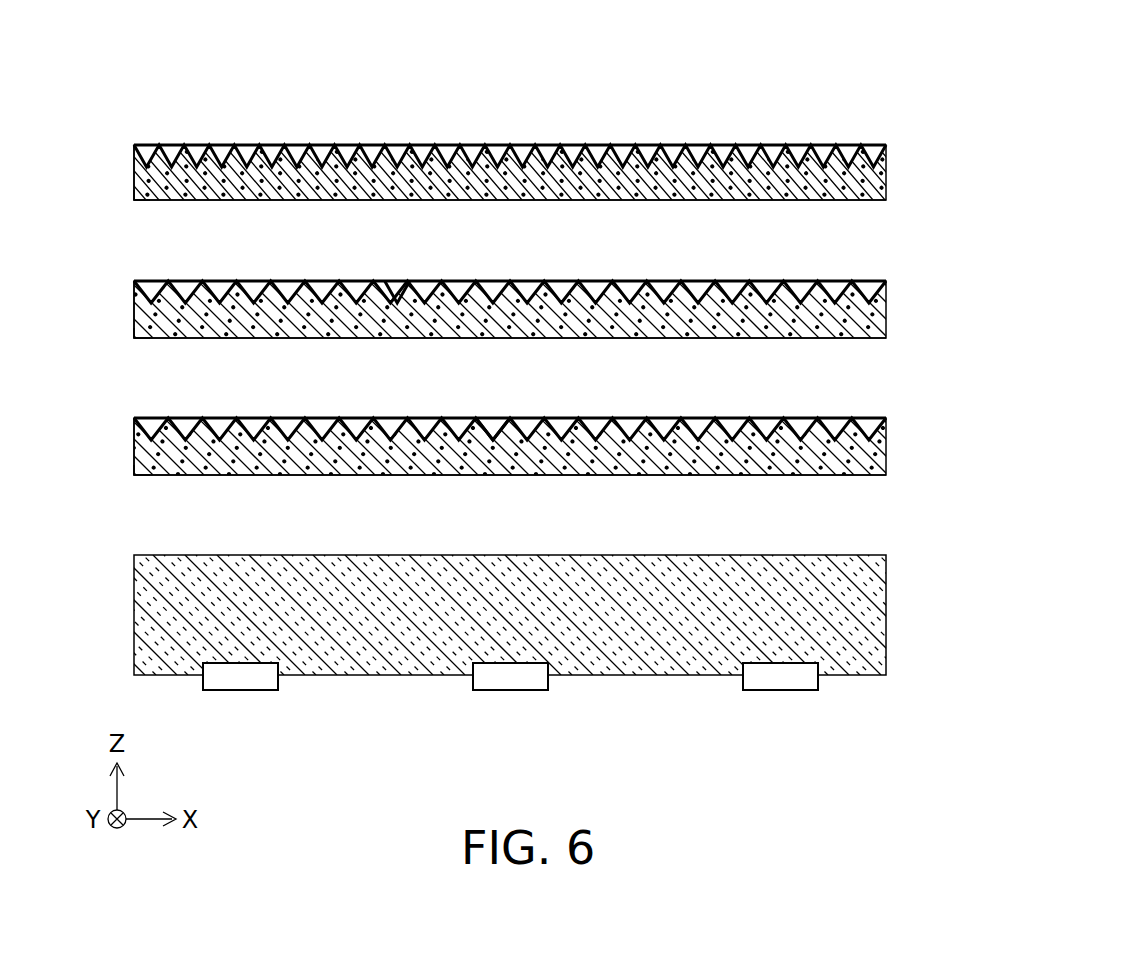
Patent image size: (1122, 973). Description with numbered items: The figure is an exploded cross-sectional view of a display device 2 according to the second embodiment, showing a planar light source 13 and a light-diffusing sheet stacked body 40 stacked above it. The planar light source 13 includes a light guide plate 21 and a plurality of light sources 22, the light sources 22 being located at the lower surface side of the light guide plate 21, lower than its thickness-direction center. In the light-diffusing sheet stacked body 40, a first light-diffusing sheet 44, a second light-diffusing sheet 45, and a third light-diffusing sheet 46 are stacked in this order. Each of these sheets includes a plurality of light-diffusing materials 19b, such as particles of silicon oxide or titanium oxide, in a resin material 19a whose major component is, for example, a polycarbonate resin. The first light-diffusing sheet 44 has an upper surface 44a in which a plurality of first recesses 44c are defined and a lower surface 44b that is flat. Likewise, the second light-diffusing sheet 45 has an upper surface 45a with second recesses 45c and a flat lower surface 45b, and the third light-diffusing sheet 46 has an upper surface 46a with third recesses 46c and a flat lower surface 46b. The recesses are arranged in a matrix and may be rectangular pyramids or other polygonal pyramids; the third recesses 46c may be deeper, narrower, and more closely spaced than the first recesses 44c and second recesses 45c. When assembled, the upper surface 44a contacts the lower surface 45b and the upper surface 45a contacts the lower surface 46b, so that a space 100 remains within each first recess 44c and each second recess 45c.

The display device 2 is at (892, 63).
The planar light source 13 is at (940, 556).
The resin material 19a is at (139, 178).
The light-diffusing material 19b is at (151, 196).
The light guide plate 21 is at (393, 640).
The light source 22 is at (240, 676).
The light-diffusing sheet stacked body 40 is at (940, 163).
The first light-diffusing sheet 44 is at (509, 438).
The upper surface of the first light-diffusing sheet 44a is at (386, 418).
The lower surface of the first light-diffusing sheet 44b is at (462, 477).
The first recess 44c is at (246, 428).
The second light-diffusing sheet 45 is at (509, 300).
The upper surface of the second light-diffusing sheet 45a is at (496, 281).
The lower surface of the second light-diffusing sheet 45b is at (622, 339).
The second recess 45c is at (250, 290).
The third light-diffusing sheet 46 is at (516, 154).
The upper surface of the third light-diffusing sheet 46a is at (531, 144).
The lower surface of the third light-diffusing sheet 46b is at (697, 202).
The third recess 46c is at (237, 152).
The space 100 is at (396, 296).